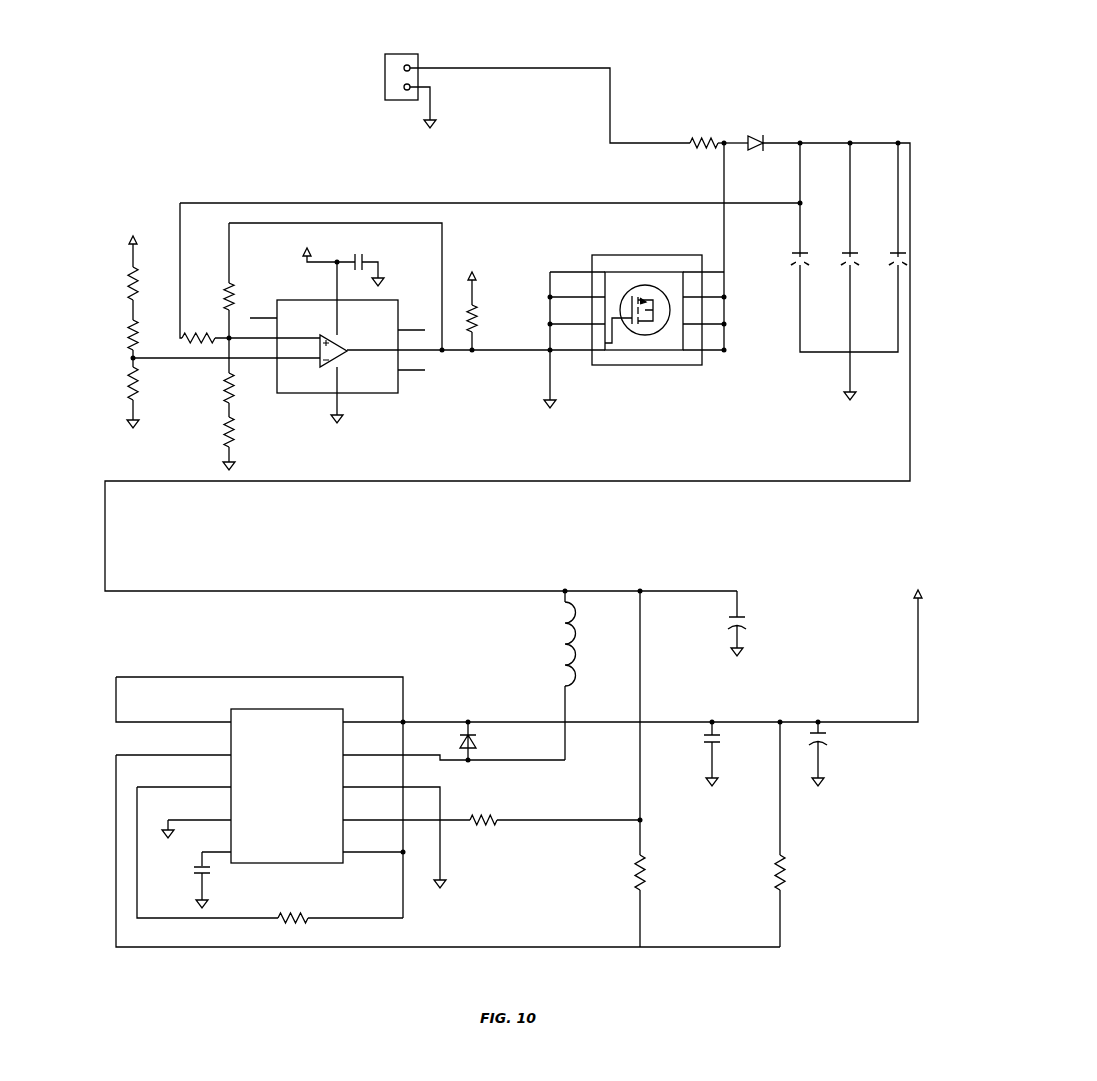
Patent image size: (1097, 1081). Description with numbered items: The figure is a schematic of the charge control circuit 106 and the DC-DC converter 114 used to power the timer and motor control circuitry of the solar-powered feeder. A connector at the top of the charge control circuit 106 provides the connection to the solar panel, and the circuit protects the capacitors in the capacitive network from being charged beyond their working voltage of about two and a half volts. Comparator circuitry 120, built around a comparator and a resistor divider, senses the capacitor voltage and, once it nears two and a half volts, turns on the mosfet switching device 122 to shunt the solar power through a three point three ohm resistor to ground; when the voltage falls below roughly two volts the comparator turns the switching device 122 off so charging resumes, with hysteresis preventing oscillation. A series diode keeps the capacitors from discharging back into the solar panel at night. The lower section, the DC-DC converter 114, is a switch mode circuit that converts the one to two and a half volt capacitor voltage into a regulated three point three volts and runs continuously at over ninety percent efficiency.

The charge control circuit 106 is at (507, 312).
The DC-DC converter 114 is at (234, 1020).
The comparator circuitry 120 is at (300, 393).
The mosfet switching device 122 is at (632, 365).